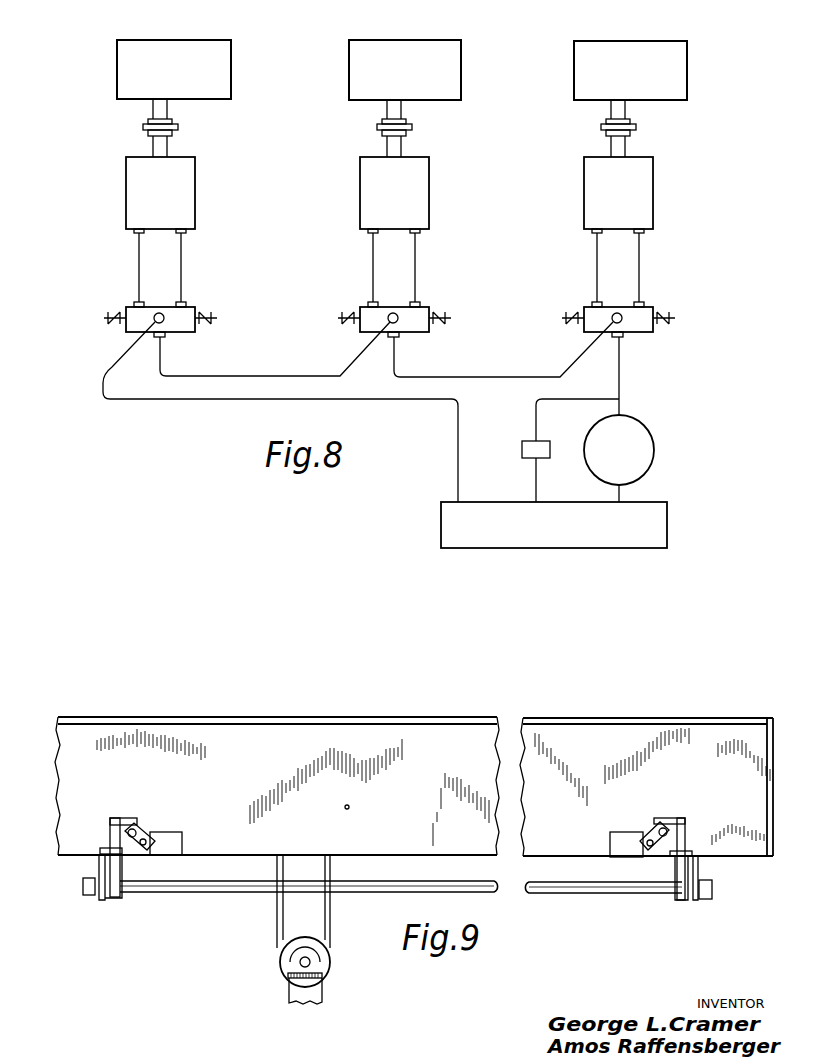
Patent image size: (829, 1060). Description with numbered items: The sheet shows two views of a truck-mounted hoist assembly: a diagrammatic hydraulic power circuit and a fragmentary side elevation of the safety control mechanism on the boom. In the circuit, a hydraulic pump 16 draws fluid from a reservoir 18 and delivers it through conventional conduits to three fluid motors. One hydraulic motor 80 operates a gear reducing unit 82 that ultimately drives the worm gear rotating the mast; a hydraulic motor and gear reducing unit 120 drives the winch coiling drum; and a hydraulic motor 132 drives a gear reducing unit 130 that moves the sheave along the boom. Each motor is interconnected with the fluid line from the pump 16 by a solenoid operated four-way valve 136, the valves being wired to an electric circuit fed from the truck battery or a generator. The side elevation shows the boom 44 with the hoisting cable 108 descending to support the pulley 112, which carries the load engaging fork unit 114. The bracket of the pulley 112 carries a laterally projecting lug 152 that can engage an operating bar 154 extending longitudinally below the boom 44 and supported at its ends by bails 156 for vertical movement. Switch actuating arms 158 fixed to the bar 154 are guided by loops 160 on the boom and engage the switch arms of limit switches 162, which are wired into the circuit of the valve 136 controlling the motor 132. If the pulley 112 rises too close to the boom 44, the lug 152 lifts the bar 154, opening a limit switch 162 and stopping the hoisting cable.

In FIG. 8, the gear reducing unit 130 is at (221, 62).
In FIG. 8, the hydraulic motor 132 is at (188, 190).
In FIG. 8, the hydraulic motor and gear reducing unit 120 is at (443, 90).
In FIG. 8, the gear reducing unit 82 is at (673, 63).
In FIG. 8, the hydraulic motor 80 is at (637, 197).
In FIG. 8, the solenoid operated 4-way valve 136 is at (135, 325).
In FIG. 8, the hydraulic pump 16 is at (638, 442).
In FIG. 8, the reservoir 18 is at (657, 517).
In FIG. 9, the boom 44 is at (285, 723).
In FIG. 9, the hoisting cable 108 is at (280, 928).
In FIG. 9, the pulley 112 is at (287, 963).
In FIG. 9, the lug 152 is at (300, 980).
In FIG. 9, the fork unit 114 is at (313, 1003).
In FIG. 9, the operating bar 154 is at (207, 890).
In FIG. 9, the switch actuating arm 158 is at (117, 818).
In FIG. 9, the loop 160 is at (104, 848).
In FIG. 9, the limit switch 162 is at (160, 837).
In FIG. 9, the bail 156 is at (100, 867).